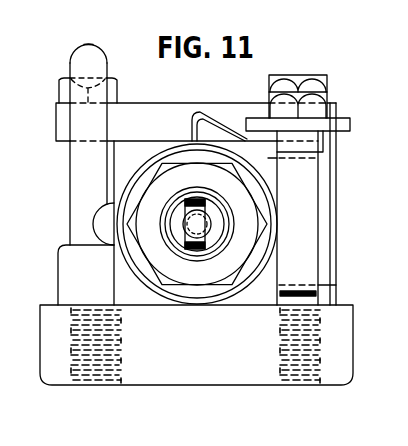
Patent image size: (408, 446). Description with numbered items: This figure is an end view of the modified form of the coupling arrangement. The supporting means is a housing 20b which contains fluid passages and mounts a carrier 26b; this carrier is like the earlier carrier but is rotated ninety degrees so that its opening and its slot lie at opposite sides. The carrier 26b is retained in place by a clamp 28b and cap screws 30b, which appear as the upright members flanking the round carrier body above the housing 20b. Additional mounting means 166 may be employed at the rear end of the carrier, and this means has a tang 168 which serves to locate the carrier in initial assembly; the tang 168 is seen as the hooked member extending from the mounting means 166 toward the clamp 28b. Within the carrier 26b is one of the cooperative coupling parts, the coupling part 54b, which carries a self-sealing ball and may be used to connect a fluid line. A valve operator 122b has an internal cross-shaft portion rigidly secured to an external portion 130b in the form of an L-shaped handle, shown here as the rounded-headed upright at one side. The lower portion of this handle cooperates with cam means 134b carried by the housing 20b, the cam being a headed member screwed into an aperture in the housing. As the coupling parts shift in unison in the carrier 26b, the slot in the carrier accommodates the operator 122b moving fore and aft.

The housing 20b is at (236, 384).
The carrier 26b is at (120, 157).
The clamp 28b is at (333, 108).
The cap screws 30b is at (76, 191).
The coupling part 54b is at (196, 268).
The valve operator 122b is at (85, 44).
The external portion 130b is at (70, 62).
The cam means 134b is at (68, 283).
The additional mounting means 166 is at (350, 124).
The tang 168 is at (192, 126).